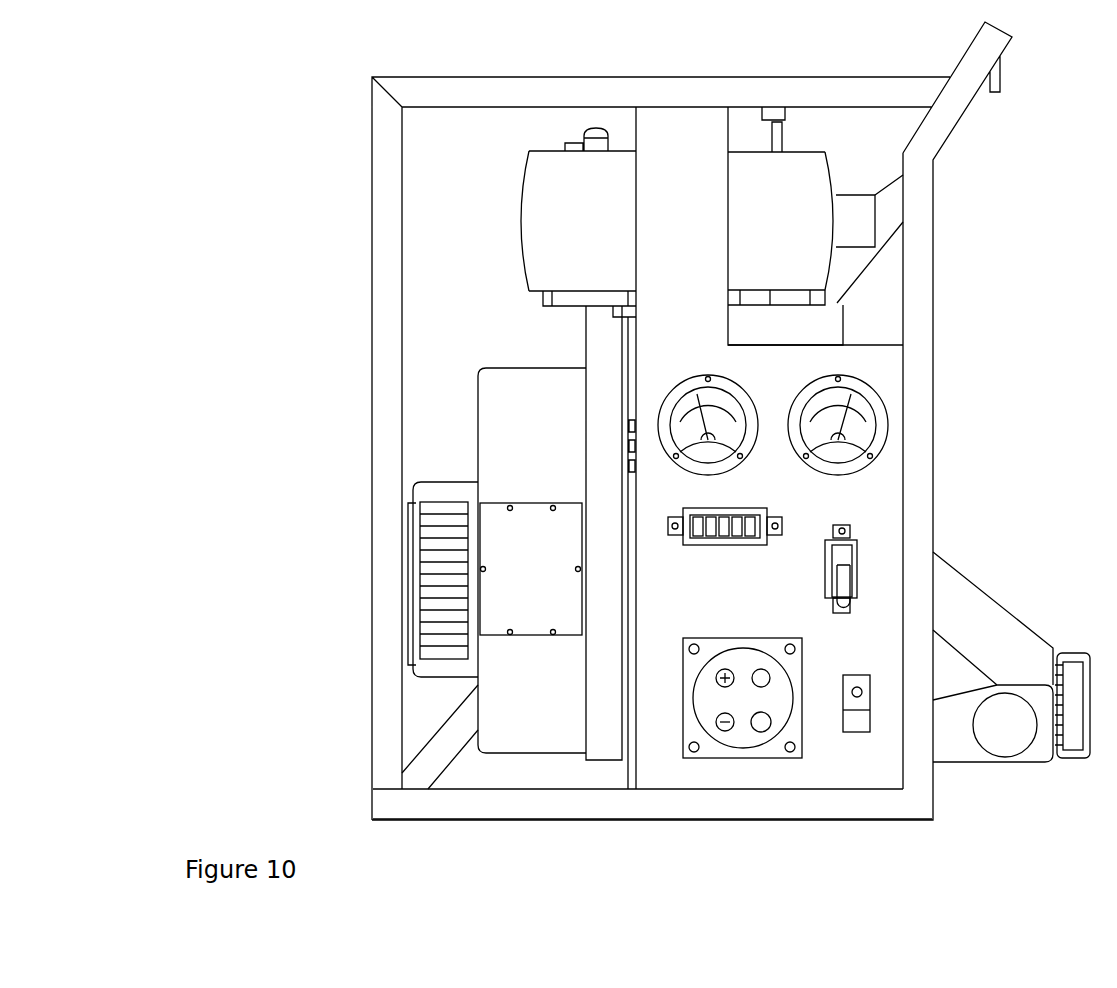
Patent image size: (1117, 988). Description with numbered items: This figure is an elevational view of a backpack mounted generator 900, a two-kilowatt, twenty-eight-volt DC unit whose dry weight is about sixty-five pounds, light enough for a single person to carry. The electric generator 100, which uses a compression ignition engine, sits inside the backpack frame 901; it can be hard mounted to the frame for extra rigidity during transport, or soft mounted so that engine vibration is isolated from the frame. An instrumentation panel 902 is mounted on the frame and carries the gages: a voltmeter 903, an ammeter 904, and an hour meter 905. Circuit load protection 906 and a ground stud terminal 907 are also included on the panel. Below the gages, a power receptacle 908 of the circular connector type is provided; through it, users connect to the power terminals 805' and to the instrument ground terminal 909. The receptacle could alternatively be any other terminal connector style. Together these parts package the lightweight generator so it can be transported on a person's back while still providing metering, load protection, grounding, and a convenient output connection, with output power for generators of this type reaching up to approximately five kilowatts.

The electric generator 100 is at (572, 343).
The backpack mounted generator 900 is at (348, 707).
The backpack frame 901 is at (380, 810).
The instrumentation panel 902 is at (887, 380).
The voltmeter 903 is at (738, 463).
The ammeter 904 is at (863, 470).
The hour meter 905 is at (768, 510).
The circuit load protection 906 is at (853, 557).
The ground stud terminal 907 is at (861, 732).
The power receptacle 908 is at (745, 748).
The instrument ground terminal 909 is at (765, 683).
The power terminals 805' is at (713, 789).